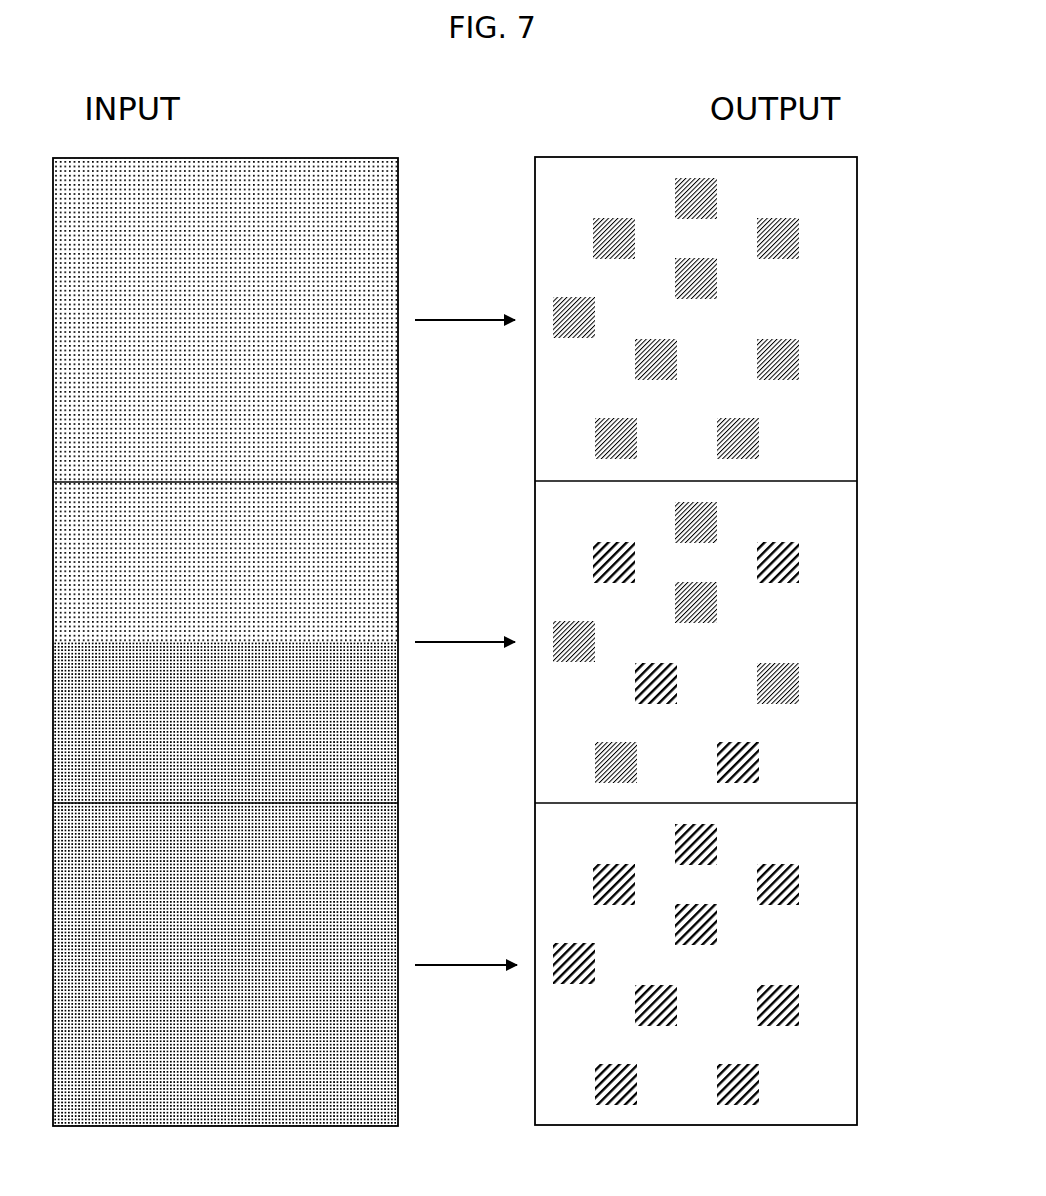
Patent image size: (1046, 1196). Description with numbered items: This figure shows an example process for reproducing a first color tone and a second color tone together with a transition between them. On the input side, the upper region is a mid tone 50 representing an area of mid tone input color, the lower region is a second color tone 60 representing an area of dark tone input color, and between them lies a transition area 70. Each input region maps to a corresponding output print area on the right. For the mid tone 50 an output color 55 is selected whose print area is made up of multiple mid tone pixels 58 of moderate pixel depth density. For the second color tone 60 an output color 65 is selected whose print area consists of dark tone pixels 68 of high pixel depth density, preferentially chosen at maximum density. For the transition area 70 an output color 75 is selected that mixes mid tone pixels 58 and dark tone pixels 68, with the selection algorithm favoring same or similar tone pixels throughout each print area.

The mid tone 50 is at (250, 148).
The output color 55 is at (657, 146).
The mid tone pixels 58 is at (575, 238).
The second color tone 60 is at (413, 917).
The output color 65 is at (515, 1063).
The dark tone pixels 68 is at (818, 581).
The transition area 70 is at (412, 575).
The output color 75 is at (515, 742).